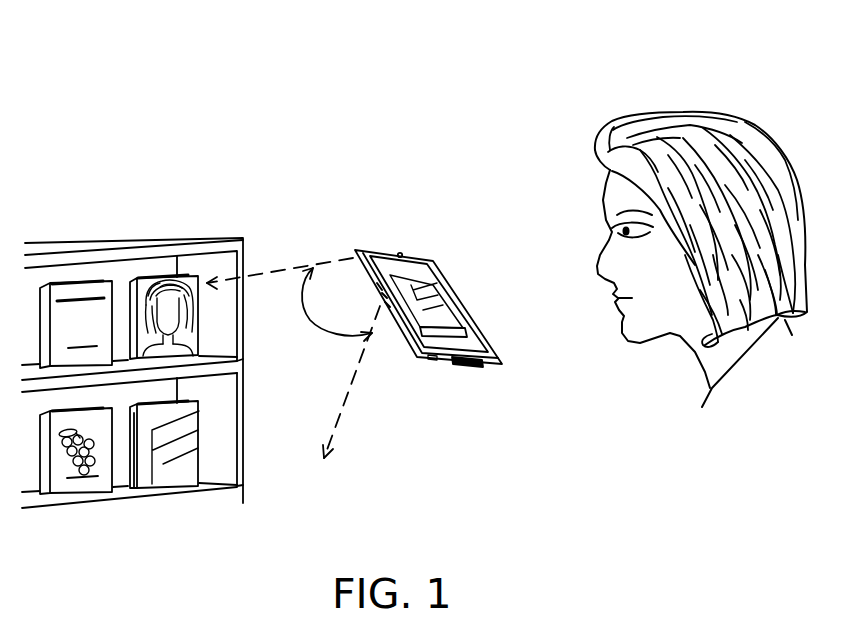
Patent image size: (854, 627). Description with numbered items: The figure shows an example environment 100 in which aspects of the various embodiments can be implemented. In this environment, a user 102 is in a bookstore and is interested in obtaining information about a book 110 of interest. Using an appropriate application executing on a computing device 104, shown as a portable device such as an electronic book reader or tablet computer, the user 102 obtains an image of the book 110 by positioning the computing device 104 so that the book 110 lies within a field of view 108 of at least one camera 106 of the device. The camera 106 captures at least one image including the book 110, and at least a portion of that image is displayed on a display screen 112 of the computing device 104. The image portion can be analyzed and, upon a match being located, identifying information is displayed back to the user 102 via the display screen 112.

The environment 100 is at (96, 100).
The user 102 is at (557, 170).
The computing device 104 is at (431, 356).
The camera 106 is at (401, 254).
The field of view 108 is at (327, 308).
The book 110 is at (183, 483).
The display screen 112 is at (448, 304).